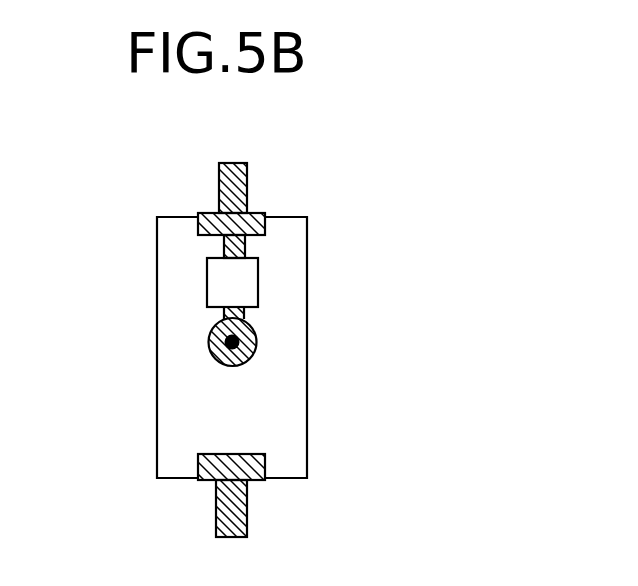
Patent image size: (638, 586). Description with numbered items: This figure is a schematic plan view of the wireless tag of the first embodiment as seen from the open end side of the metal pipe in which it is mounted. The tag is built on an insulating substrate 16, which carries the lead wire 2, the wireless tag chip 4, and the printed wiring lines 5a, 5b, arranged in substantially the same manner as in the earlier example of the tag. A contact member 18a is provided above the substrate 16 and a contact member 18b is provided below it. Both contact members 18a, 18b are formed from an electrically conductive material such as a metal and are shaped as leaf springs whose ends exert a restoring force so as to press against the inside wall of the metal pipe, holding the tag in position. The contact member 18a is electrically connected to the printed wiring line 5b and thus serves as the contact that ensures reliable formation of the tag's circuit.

The contact member 18a is at (247, 169).
The printed wiring line 5b is at (245, 248).
The wireless tag chip 4 is at (210, 282).
The printed wiring line 5a is at (257, 333).
The lead wire 2 is at (209, 337).
The insulating substrate 16 is at (287, 408).
The contact member 18b is at (247, 513).